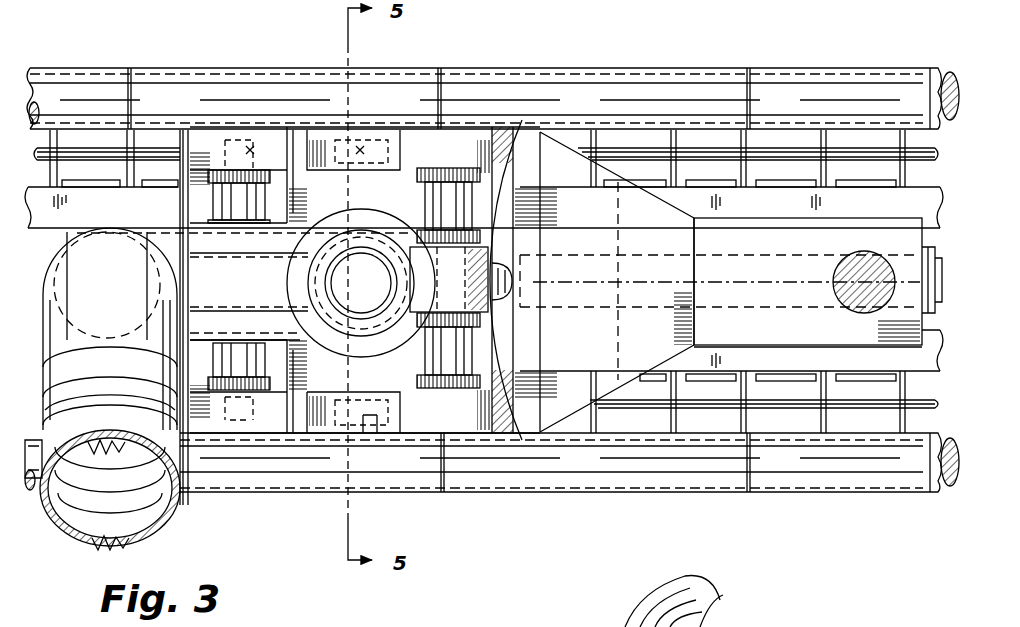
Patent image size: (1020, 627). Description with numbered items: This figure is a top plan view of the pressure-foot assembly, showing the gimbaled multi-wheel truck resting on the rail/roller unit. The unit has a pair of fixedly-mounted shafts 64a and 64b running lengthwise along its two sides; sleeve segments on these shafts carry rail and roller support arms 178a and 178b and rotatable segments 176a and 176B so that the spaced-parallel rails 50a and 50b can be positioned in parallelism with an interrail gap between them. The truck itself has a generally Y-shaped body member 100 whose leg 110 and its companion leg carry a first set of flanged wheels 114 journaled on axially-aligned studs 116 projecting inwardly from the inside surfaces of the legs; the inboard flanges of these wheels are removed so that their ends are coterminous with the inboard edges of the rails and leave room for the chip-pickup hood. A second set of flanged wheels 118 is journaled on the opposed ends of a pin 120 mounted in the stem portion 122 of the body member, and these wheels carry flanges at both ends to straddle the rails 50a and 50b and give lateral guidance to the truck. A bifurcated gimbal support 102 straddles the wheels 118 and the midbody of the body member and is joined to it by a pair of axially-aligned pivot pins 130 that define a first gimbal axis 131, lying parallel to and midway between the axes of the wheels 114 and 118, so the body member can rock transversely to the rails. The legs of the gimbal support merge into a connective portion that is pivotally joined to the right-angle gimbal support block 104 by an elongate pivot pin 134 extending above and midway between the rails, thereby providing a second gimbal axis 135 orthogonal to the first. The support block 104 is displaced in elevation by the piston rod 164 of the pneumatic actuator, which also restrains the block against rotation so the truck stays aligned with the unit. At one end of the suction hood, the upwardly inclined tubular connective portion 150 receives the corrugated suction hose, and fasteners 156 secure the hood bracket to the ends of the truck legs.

The rail 50a is at (147, 217).
The rail 50b is at (890, 366).
The shaft 64a is at (940, 78).
The shaft 64b is at (928, 480).
The body member 100 is at (297, 420).
The gimbal support 102 is at (407, 398).
The gimbal support block 104 is at (580, 417).
The leg 110 is at (300, 182).
The wheels 114 is at (227, 197).
The studs 116 is at (250, 150).
The flanged wheels 118 is at (453, 190).
The pin 120 is at (468, 298).
The stem portion 122 is at (515, 200).
The pivot pins 130 is at (360, 150).
The first gimbal axis 131 is at (352, 457).
The pivot pin 134 is at (568, 257).
The second gimbal axis 135 is at (598, 284).
The tubular connective portion 150 is at (127, 297).
The fasteners 156 is at (173, 133).
The piston rod 164 is at (862, 252).
The upper rail joint 176a is at (770, 77).
The lower rail joint 176B is at (762, 474).
The upper strut assembly 178a is at (660, 137).
The lower strut assembly 178b is at (660, 433).